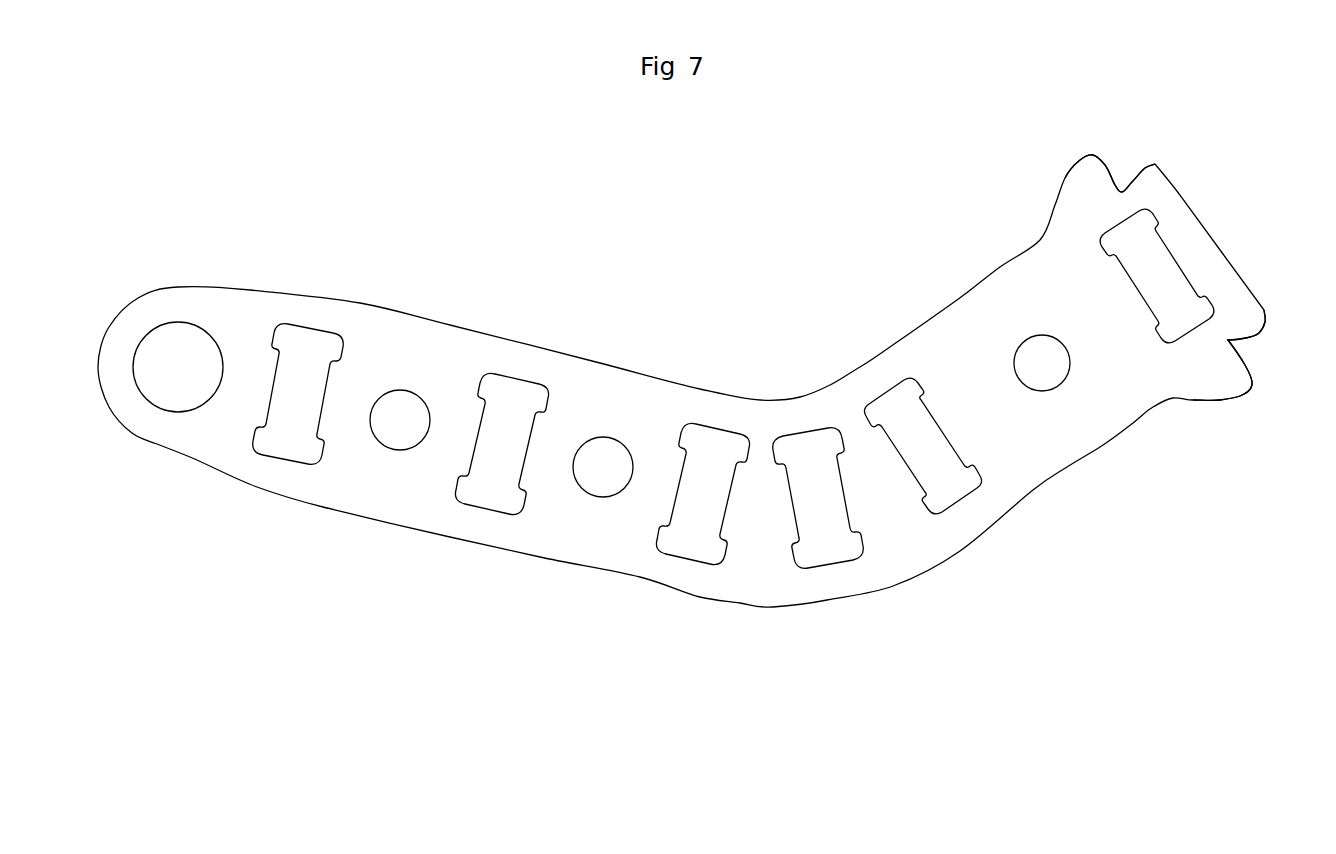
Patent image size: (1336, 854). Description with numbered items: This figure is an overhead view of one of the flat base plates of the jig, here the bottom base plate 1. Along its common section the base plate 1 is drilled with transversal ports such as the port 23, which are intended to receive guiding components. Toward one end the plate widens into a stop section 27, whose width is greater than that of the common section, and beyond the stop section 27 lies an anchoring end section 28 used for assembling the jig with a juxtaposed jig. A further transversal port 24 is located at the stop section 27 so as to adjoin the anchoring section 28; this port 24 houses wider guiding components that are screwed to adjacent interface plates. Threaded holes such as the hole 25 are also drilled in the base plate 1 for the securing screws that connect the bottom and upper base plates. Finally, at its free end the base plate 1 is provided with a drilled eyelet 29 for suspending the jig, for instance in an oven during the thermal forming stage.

The bottom base plate 1 is at (372, 485).
The transversal port 23 is at (293, 437).
The transversal port 24 is at (1183, 323).
The threaded hole 25 is at (407, 395).
The stop section 27 is at (1089, 177).
The anchoring end section 28 is at (1243, 313).
The drilled eyelet 29 is at (173, 387).